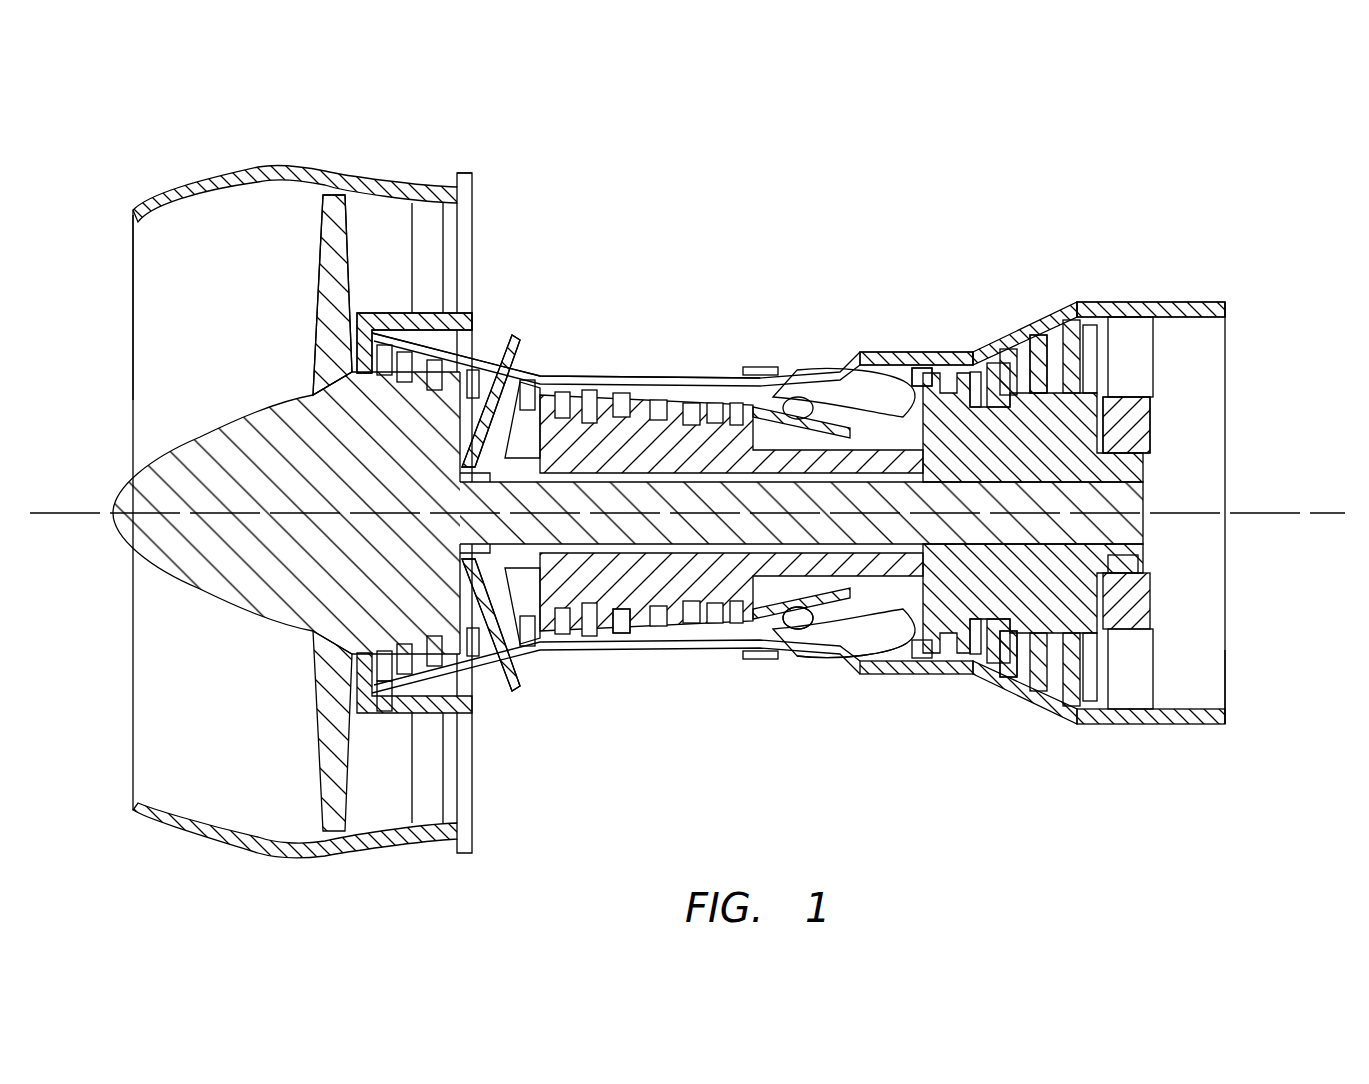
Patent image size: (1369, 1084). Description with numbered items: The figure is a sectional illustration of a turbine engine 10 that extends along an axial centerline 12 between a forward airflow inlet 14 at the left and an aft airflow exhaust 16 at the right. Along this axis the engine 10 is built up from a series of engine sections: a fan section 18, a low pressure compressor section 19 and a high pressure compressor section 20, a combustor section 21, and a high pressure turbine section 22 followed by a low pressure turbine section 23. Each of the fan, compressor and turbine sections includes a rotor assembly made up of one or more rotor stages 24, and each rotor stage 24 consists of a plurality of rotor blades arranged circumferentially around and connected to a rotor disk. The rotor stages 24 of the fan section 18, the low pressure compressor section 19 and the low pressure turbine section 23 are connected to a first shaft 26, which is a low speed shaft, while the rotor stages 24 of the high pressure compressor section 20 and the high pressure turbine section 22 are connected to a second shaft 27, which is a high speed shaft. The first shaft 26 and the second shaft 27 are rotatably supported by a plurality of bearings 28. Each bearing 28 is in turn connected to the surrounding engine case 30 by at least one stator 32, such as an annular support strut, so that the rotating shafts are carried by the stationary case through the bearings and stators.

The turbine engine 10 is at (178, 145).
The axial centerline 12 is at (1330, 520).
The forward airflow inlet 14 is at (133, 724).
The aft airflow exhaust 16 is at (1232, 660).
The fan section 18 is at (336, 186).
The low pressure compressor section 19 is at (420, 352).
The high pressure compressor section 20 is at (607, 392).
The combustor section 21 is at (852, 362).
The high pressure turbine section 22 is at (923, 378).
The low pressure turbine section 23 is at (1025, 357).
The rotor stage 24 is at (297, 692).
The first shaft 26 is at (768, 660).
The second shaft 27 is at (813, 653).
The bearing 28 is at (494, 620).
The engine case 30 is at (1150, 302).
The stator 32 is at (466, 462).